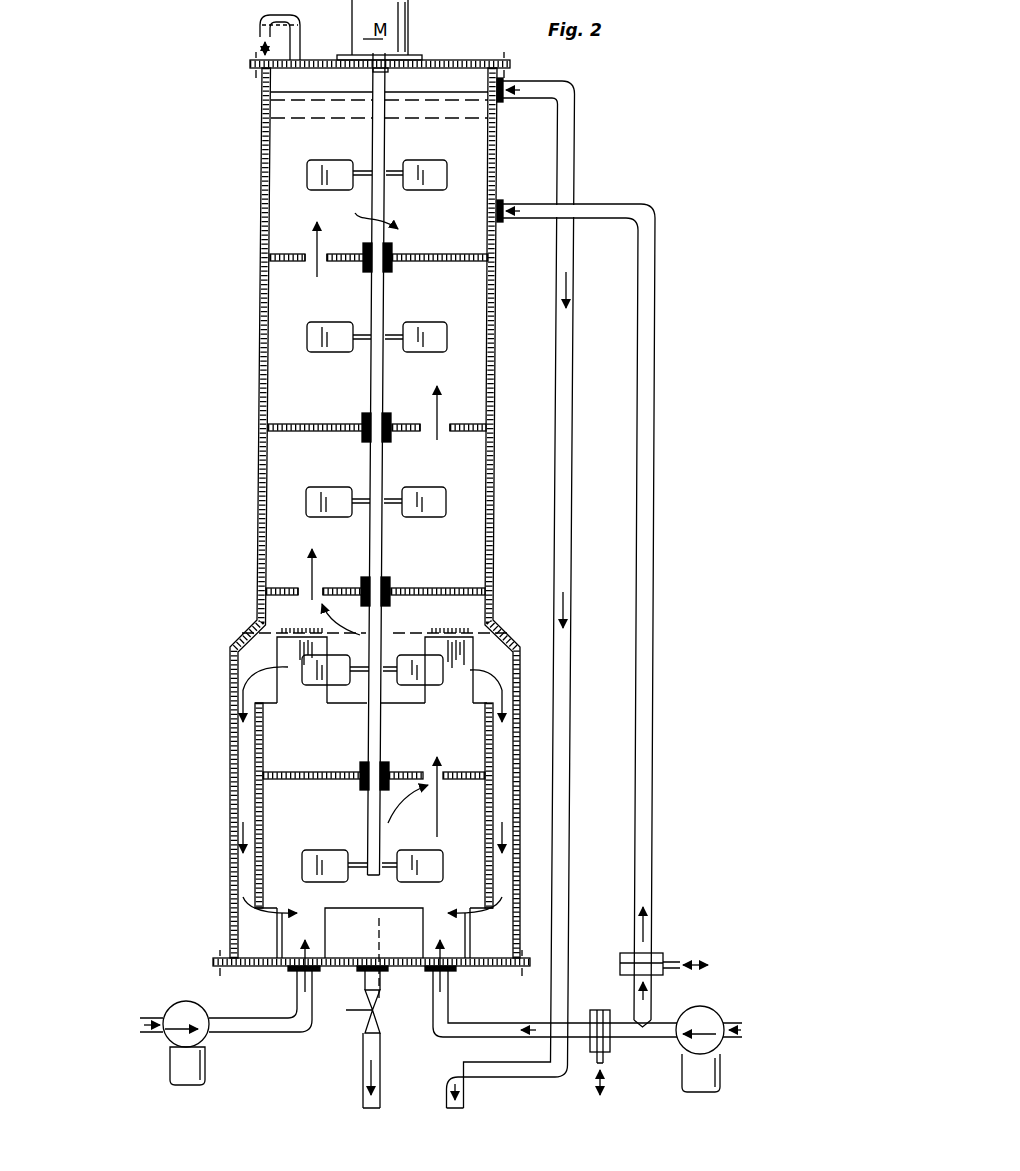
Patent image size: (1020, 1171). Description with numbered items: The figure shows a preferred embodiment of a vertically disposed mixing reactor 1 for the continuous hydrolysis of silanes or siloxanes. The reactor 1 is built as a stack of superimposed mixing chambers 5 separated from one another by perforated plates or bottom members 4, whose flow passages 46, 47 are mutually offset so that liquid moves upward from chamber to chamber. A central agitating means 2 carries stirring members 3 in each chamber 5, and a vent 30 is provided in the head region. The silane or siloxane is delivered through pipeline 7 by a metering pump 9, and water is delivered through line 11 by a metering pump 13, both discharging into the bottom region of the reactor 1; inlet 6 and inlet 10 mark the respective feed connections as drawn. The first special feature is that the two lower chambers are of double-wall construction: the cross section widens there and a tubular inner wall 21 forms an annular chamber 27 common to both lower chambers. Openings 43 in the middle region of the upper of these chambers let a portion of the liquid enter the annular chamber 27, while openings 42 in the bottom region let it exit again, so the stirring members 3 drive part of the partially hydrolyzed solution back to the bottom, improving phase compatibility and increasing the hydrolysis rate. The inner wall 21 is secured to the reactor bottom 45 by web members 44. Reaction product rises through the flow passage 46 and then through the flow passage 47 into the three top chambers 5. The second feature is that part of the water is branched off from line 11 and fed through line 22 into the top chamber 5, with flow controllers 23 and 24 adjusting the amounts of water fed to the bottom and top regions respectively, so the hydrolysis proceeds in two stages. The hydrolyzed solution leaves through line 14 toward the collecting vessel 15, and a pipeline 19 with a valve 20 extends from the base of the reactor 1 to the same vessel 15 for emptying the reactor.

The reactor 1 is at (258, 108).
The agitating means 2 is at (370, 128).
The stirring members 3 is at (313, 173).
The bottom members 4 is at (460, 253).
The mixing chambers 5 is at (461, 156).
The feed inlet 6 is at (134, 1023).
The pipeline 7 is at (160, 1018).
The metering pump 9 is at (194, 1003).
The second feed inlet 10 is at (749, 1030).
The line 11 is at (443, 1008).
The metering pump 13 is at (708, 1008).
The line 14 is at (573, 726).
The collecting vessel 15 is at (412, 1120).
The pipeline 19 is at (368, 1053).
The valve 20 is at (383, 1023).
The inner wall 21 is at (258, 802).
The line 22 is at (655, 772).
The flow controller 23 is at (670, 960).
The flow controller 24 is at (602, 1060).
The annular chamber 27 is at (243, 747).
The vent 30 is at (258, 27).
The openings 42 is at (272, 948).
The openings 43 is at (477, 663).
The web members 44 is at (430, 932).
The reactor bottom 45 is at (410, 966).
The flow passage 46 is at (425, 770).
The flow passage 47 is at (327, 263).